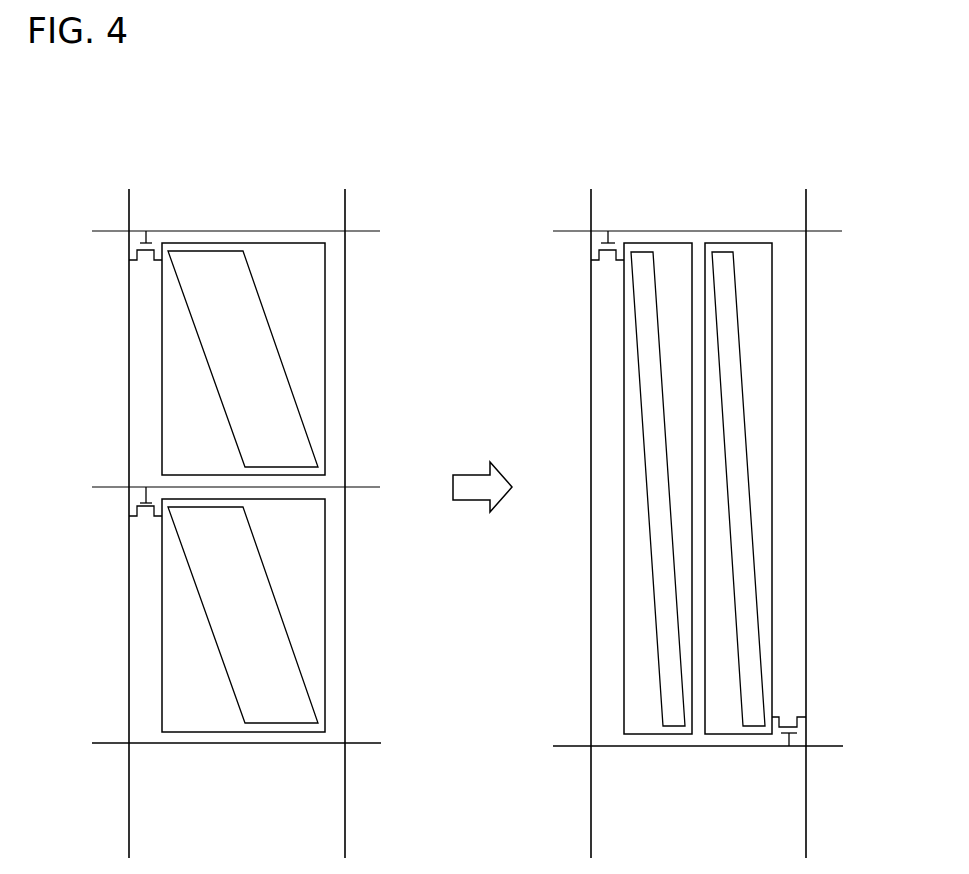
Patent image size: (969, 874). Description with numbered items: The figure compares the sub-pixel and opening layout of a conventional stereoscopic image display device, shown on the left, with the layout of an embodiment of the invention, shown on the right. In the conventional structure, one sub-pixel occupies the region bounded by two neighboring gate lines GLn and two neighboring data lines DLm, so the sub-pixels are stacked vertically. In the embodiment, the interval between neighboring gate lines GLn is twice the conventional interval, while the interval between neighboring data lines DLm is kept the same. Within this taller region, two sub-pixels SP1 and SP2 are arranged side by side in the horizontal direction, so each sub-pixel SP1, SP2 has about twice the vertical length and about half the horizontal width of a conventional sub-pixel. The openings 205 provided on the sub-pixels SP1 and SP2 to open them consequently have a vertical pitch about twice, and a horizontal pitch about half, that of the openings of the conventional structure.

The openings 205 is at (258, 373).
The first sub-pixel SP1 is at (161, 342).
The second sub-pixel SP2 is at (161, 597).
The data line DLm is at (359, 509).
The gate line GLn is at (486, 231).